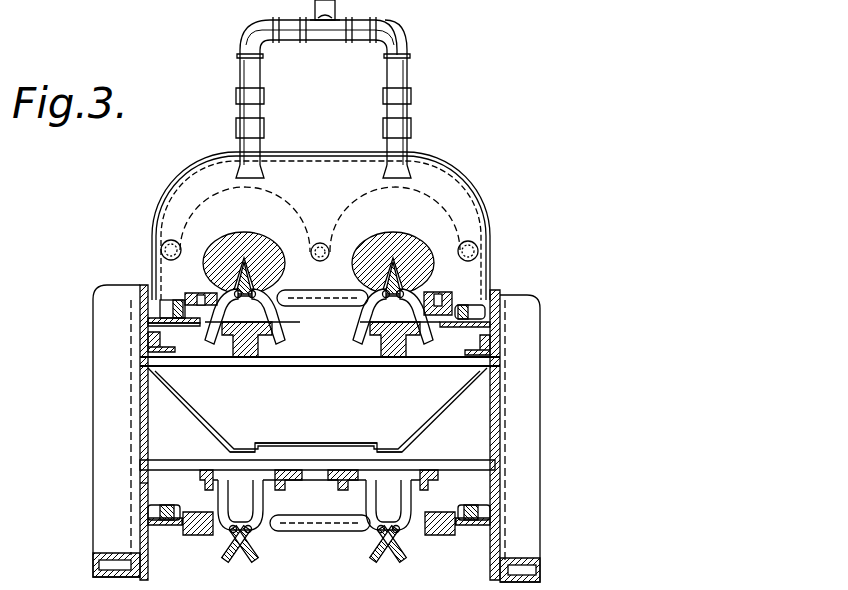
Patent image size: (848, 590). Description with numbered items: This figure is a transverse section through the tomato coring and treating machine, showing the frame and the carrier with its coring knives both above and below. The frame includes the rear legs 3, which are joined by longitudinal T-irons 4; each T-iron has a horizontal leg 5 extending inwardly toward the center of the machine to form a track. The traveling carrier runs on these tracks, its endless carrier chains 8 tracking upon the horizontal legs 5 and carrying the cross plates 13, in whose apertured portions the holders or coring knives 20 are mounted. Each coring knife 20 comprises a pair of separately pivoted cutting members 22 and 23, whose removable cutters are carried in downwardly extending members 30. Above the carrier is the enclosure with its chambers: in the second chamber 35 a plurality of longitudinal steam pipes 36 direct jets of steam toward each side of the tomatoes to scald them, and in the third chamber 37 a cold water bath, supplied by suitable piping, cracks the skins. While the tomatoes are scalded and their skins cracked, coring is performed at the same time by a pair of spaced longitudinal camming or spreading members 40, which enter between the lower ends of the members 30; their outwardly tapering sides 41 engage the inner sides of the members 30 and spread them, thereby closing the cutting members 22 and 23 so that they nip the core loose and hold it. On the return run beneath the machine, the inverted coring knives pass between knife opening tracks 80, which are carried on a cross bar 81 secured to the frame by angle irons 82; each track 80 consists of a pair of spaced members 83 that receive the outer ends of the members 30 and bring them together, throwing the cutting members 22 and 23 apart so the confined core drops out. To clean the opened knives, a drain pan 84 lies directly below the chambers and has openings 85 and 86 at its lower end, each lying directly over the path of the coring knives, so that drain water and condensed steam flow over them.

The rear legs 3 is at (560, 448).
The longitudinal T-irons 4 is at (145, 310).
The horizontal leg 5 is at (185, 326).
The endless carrier chains 8 is at (475, 532).
The cross plates 13 is at (445, 296).
The coring knives 20 is at (390, 555).
The cutting member 22 is at (225, 545).
The cutting member 23 is at (262, 548).
The downwardly extending members 30 is at (386, 505).
The second chamber 35 is at (405, 78).
The longitudinal steam pipes 36 is at (478, 248).
The third chamber 37 is at (463, 200).
The spreading members 40 is at (365, 380).
The outwardly tapering sides 41 is at (282, 330).
The knife opening tracks 80 is at (336, 470).
The cross bar 81 is at (176, 460).
The angle irons 82 is at (140, 483).
The spaced members 83 is at (285, 496).
The drain pan 84 is at (440, 422).
The opening 85 is at (248, 448).
The opening 86 is at (388, 448).